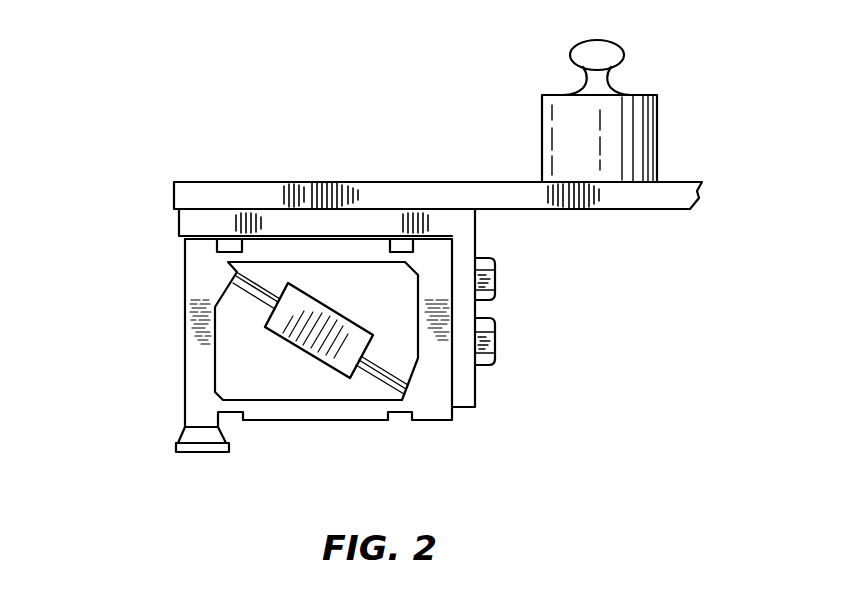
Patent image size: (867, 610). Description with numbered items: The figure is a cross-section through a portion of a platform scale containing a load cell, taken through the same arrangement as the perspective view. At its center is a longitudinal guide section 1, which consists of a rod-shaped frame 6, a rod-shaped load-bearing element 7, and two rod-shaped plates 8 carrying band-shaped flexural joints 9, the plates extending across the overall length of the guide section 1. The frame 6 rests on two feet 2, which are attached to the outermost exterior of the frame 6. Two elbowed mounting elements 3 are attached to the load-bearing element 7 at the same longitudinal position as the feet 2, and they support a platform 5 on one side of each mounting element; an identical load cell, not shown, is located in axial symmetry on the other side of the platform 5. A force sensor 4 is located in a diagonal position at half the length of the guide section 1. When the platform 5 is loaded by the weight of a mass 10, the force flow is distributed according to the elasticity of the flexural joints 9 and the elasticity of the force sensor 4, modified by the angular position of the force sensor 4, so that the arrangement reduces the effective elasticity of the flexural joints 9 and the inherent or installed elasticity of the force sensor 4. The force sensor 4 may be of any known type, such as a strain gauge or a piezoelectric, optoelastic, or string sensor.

The longitudinal guide section 1 is at (450, 417).
The feet 2 is at (180, 437).
The elbowed mounting elements 3 is at (177, 220).
The force sensor 4 is at (306, 332).
The platform 5 is at (407, 192).
The rod-shaped frame 6 is at (202, 350).
The rod-shaped load-bearing element 7 is at (442, 323).
The rod-shaped plates 8 is at (277, 253).
The flexural joints 9 is at (217, 246).
The mass 10 is at (638, 120).